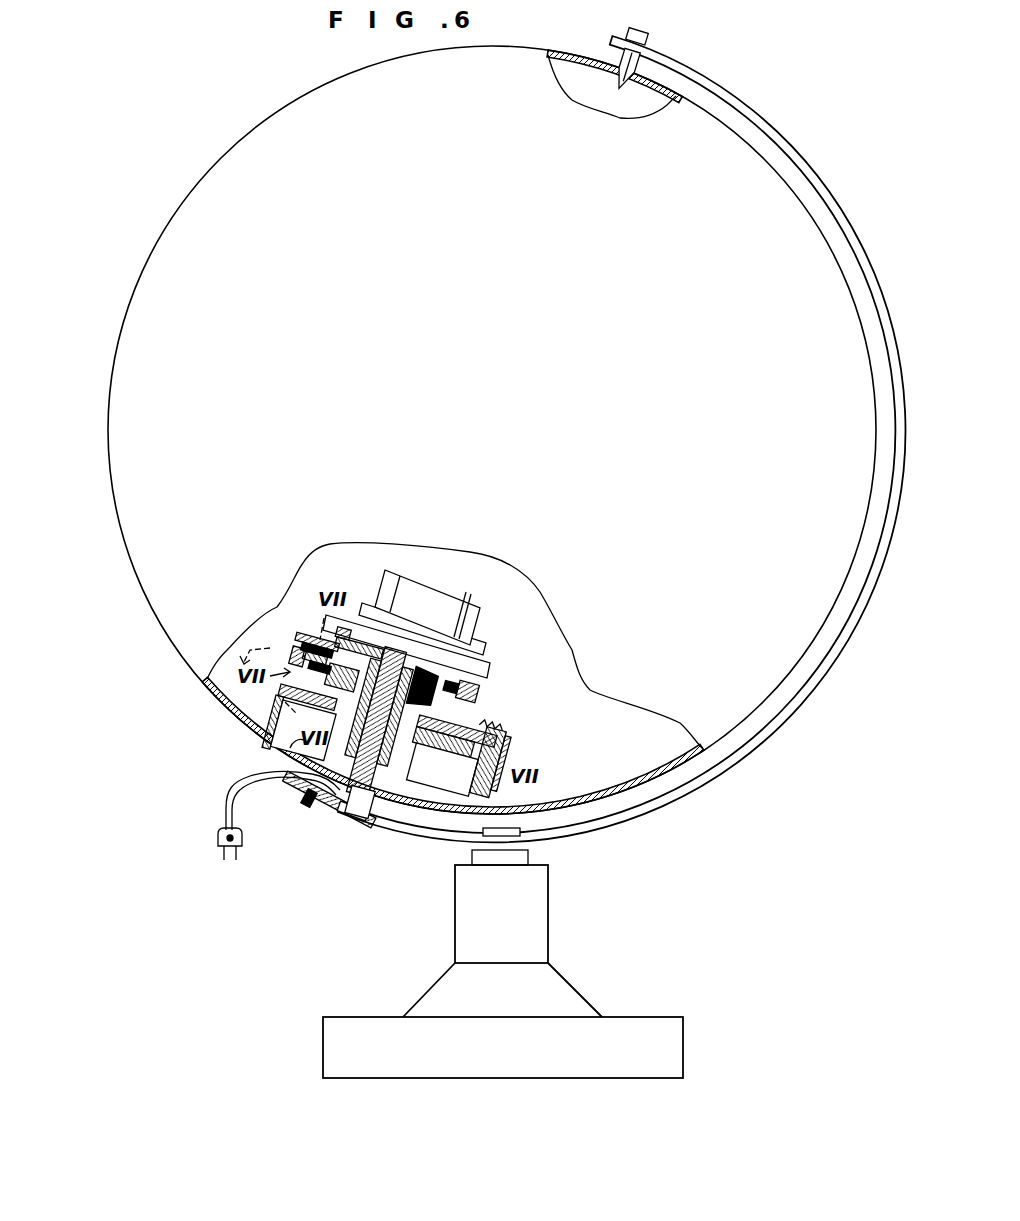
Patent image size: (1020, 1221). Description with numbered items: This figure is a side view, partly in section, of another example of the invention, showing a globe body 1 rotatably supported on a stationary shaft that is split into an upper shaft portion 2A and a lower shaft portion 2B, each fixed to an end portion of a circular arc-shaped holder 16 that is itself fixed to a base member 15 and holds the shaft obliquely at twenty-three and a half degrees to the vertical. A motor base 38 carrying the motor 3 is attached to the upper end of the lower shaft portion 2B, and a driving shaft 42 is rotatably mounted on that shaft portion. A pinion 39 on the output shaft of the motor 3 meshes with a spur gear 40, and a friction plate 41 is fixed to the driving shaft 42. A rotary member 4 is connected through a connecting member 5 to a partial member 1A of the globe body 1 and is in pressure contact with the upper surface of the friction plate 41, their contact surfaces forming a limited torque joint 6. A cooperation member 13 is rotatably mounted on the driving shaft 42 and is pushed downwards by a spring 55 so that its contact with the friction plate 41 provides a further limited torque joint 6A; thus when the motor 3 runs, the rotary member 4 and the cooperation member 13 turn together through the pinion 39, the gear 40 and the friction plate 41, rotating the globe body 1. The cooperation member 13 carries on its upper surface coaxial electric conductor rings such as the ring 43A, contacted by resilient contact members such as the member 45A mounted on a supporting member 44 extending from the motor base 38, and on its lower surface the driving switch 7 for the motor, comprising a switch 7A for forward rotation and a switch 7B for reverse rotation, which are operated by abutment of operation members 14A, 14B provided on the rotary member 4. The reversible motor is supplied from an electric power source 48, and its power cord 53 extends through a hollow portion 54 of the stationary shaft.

The globe body 1 is at (272, 135).
The partial member 1A is at (274, 750).
The upper shaft portion 2A is at (618, 68).
The lower shaft portion 2B is at (384, 830).
The motor 3 is at (432, 592).
The rotary member 4 is at (510, 798).
The connecting member 5 is at (481, 826).
The limited torque joint 6 is at (288, 786).
The limited torque joint 6A is at (450, 757).
The driving switch 7 is at (216, 690).
The switch for forward rotation 7A is at (297, 657).
The switch for reverse rotation 7B is at (497, 739).
The cooperation member 13 is at (488, 738).
The operation member 14A is at (286, 700).
The operation member 14B is at (503, 743).
The base member 15 is at (542, 928).
The circular arc-shaped holder 16 is at (722, 776).
The motor base 38 is at (344, 642).
The pinion 39 is at (472, 702).
The spur gear 40 is at (380, 618).
The friction plate 41 is at (309, 800).
The driving shaft 42 is at (362, 645).
The electric conductor ring 43A is at (297, 658).
The supporting member 44 is at (296, 655).
The resilient contact member 45A is at (308, 658).
The electric power source 48 is at (216, 846).
The power cord 53 is at (224, 804).
The hollow portion 54 is at (350, 828).
The spring 55 is at (462, 612).